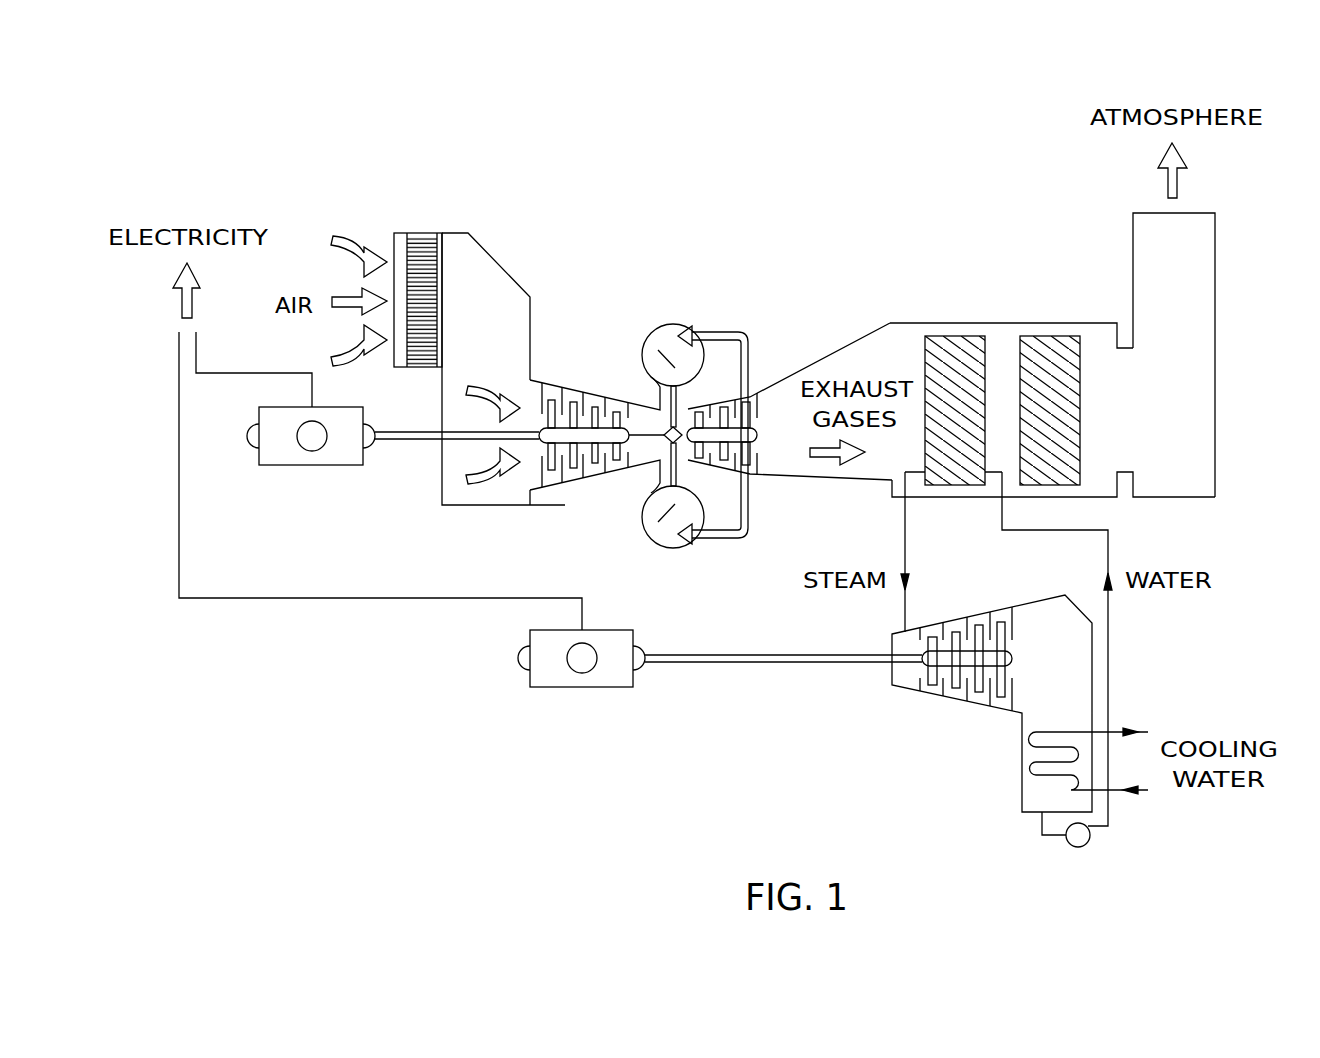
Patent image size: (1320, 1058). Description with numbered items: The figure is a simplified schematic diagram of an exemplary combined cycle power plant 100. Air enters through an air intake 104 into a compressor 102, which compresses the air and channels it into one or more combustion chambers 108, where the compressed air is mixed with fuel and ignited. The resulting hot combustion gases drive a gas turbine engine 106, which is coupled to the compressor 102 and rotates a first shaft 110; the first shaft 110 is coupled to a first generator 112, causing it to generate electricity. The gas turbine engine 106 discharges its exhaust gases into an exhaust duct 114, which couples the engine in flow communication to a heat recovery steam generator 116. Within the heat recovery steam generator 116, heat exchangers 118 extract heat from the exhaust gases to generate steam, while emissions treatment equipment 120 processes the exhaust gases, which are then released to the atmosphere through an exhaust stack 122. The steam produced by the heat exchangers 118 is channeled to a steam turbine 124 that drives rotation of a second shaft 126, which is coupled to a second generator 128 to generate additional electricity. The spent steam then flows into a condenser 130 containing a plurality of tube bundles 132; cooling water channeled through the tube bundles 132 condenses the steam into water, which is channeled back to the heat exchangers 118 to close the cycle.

The combined cycle power plant 100 is at (373, 125).
The compressor 102 is at (575, 388).
The air intake 104 is at (422, 232).
The gas turbine engine 106 is at (690, 268).
The combustion chambers 108 is at (683, 323).
The first shaft 110 is at (405, 443).
The first generator 112 is at (312, 467).
The exhaust duct 114 is at (788, 360).
The heat recovery steam generator 116 is at (988, 297).
The heat exchangers 118 is at (925, 357).
The emissions treatment equipment 120 is at (1080, 447).
The exhaust stack 122 is at (1215, 275).
The steam turbine 124 is at (978, 612).
The second shaft 126 is at (763, 663).
The second generator 128 is at (582, 688).
The condenser 130 is at (1028, 762).
The tube bundles 132 is at (1028, 788).